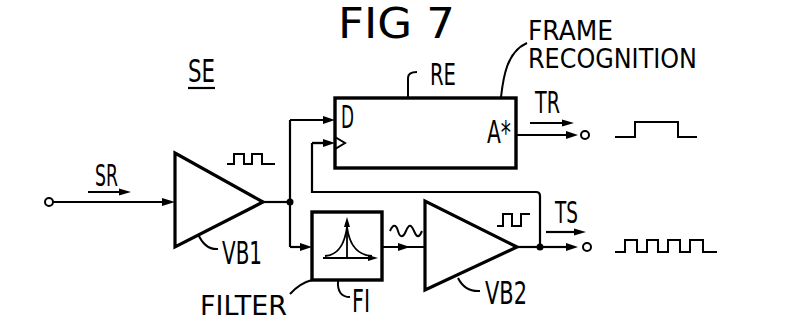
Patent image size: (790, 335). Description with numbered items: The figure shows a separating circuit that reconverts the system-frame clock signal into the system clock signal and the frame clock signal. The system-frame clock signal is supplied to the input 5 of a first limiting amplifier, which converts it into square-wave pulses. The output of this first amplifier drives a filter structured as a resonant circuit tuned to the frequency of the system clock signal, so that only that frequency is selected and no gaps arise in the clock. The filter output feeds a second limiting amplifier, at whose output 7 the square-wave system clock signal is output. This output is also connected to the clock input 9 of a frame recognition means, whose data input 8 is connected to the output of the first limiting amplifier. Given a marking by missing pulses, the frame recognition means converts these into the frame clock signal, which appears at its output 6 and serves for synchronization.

The input 5 is at (100, 202).
The output 6 is at (606, 136).
The output 7 is at (628, 247).
The data input 8 is at (330, 114).
The clock input 9 is at (333, 147).